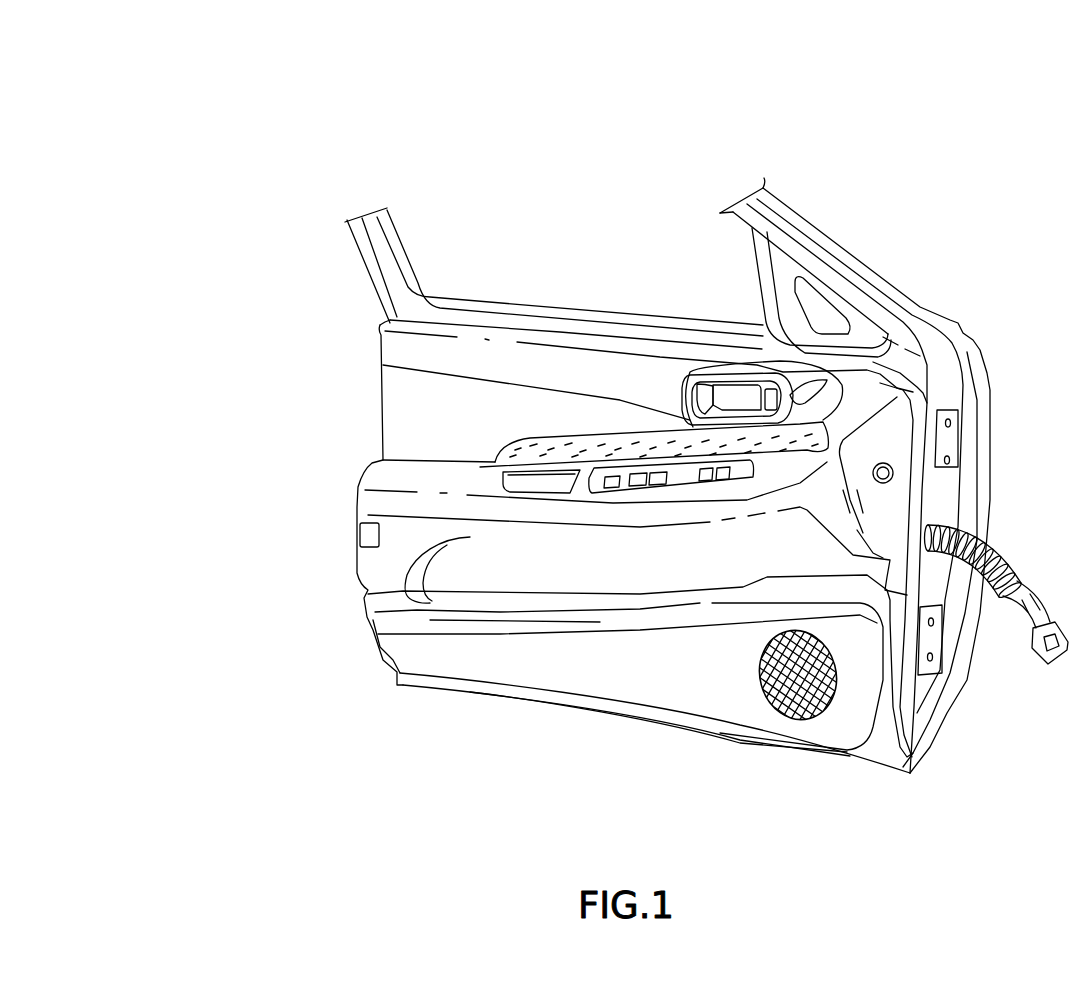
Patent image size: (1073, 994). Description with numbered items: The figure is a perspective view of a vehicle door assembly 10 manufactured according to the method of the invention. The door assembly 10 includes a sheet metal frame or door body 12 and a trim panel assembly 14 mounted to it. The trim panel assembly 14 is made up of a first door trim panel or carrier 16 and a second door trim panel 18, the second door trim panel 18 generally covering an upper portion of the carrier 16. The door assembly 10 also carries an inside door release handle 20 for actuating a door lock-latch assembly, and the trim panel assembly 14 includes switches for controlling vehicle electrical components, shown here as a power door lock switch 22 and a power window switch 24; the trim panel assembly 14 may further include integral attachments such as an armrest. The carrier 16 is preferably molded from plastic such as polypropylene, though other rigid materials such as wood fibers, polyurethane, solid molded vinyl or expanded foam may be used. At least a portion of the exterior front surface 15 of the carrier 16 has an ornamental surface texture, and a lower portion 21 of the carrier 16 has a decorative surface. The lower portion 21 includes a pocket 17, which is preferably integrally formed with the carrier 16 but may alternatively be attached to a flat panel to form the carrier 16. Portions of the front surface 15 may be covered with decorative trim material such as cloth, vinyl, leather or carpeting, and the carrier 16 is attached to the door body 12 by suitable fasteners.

The vehicle door assembly 10 is at (362, 145).
The door body 12 is at (843, 250).
The trim panel assembly 14 is at (357, 495).
The front surface 15 is at (573, 668).
The carrier 16 is at (360, 608).
The pocket 17 is at (473, 603).
The second door trim panel 18 is at (377, 352).
The inside door release handle 20 is at (700, 392).
The lower portion 21 is at (887, 703).
The power door lock switch 22 is at (770, 393).
The power window switch 24 is at (650, 481).